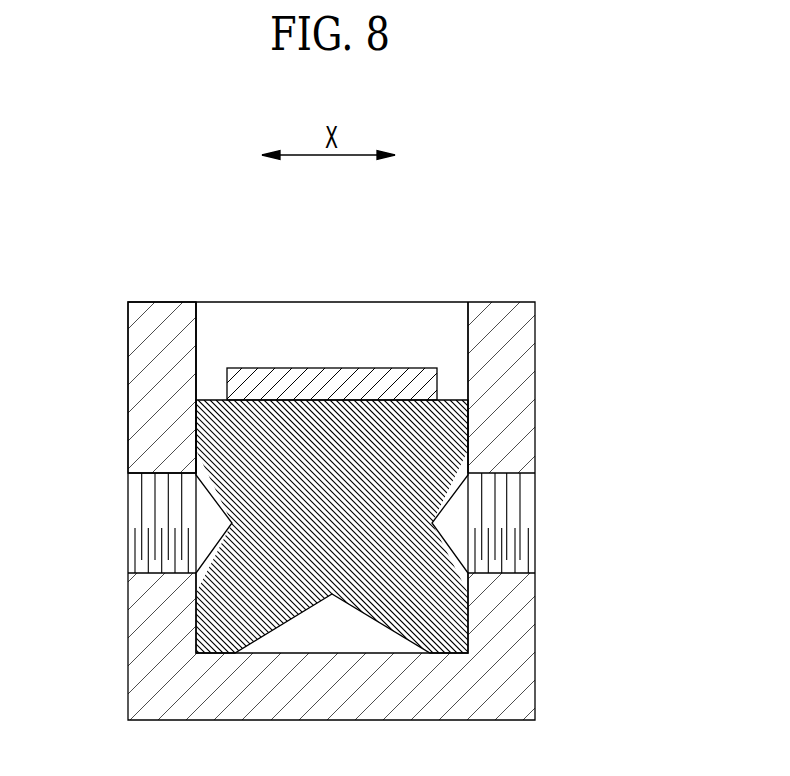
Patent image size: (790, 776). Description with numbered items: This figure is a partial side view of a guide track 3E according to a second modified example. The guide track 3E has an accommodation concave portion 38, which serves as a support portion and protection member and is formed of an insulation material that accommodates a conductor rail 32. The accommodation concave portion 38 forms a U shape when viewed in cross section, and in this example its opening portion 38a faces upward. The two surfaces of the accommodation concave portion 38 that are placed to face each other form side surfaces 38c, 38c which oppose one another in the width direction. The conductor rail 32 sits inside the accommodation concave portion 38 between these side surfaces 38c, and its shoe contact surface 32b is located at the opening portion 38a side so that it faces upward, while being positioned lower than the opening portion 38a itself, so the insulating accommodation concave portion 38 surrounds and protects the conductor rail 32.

The guide track 3E is at (590, 362).
The accommodation concave portion 38 is at (535, 625).
The opening portion 38a is at (196, 306).
The side surfaces 38c is at (198, 340).
The conductor rail 32 is at (196, 423).
The shoe contact surface 32b is at (337, 366).